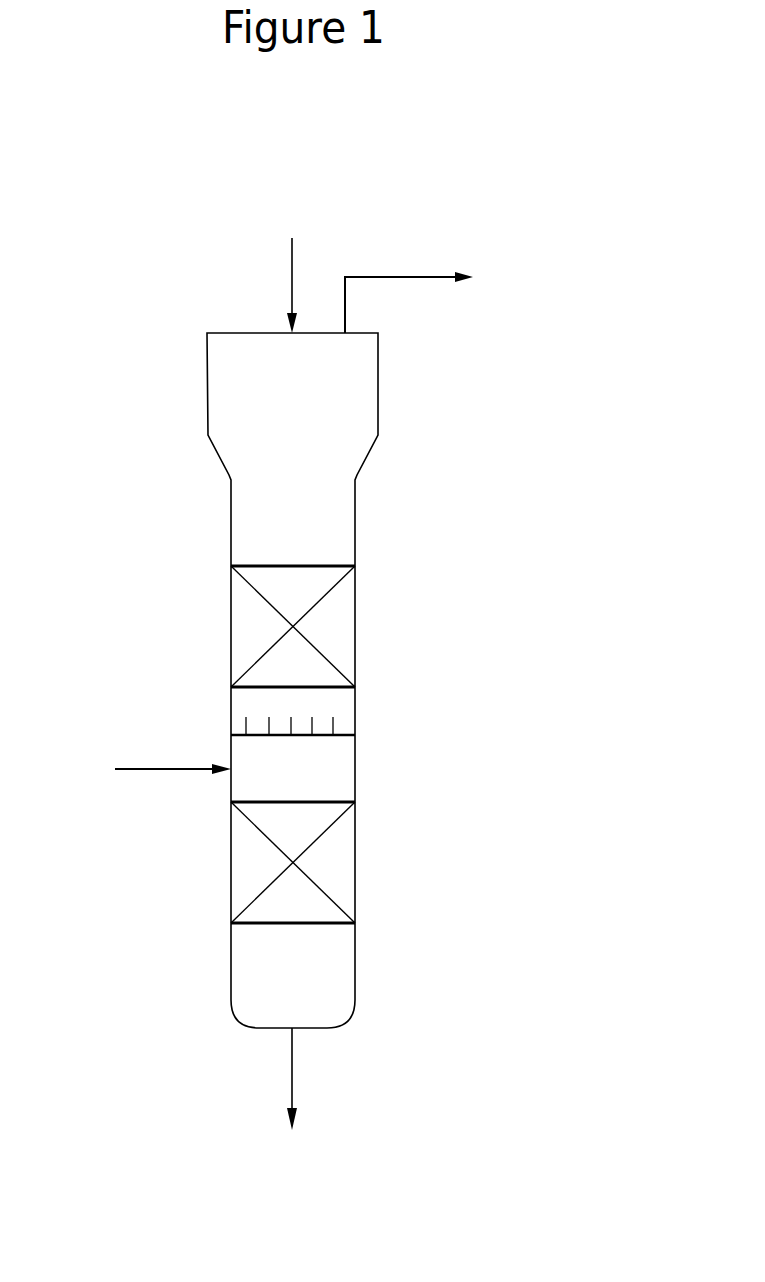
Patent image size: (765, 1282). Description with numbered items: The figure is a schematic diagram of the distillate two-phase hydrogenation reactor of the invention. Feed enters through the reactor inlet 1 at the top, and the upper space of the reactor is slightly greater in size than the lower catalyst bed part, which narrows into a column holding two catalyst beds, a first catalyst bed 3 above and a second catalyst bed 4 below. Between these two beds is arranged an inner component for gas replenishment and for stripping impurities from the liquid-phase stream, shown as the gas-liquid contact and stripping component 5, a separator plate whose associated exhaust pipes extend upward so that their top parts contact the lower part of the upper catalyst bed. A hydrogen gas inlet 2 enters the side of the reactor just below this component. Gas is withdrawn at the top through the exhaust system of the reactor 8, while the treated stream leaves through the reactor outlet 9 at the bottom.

The reactor inlet 1 is at (293, 266).
The hydrogen gas inlet 2 is at (162, 777).
The first catalyst bed 3 is at (231, 631).
The second catalyst bed 4 is at (232, 862).
The gas-liquid contact and stripping component 5 is at (353, 760).
The exhaust system of the reactor 8 is at (426, 260).
The reactor outlet 9 is at (293, 1096).